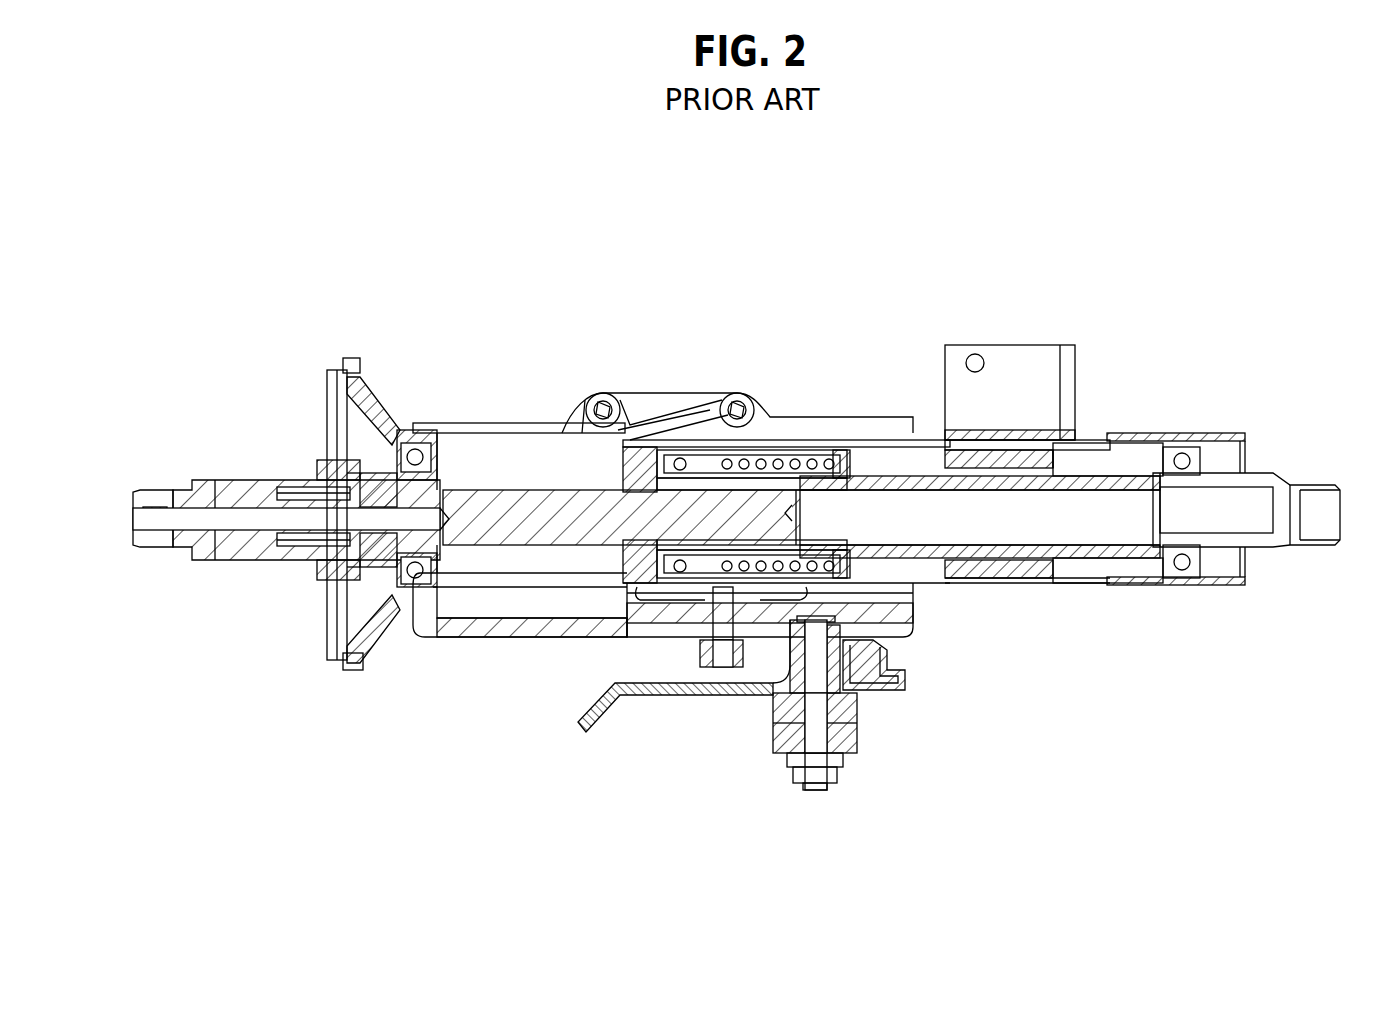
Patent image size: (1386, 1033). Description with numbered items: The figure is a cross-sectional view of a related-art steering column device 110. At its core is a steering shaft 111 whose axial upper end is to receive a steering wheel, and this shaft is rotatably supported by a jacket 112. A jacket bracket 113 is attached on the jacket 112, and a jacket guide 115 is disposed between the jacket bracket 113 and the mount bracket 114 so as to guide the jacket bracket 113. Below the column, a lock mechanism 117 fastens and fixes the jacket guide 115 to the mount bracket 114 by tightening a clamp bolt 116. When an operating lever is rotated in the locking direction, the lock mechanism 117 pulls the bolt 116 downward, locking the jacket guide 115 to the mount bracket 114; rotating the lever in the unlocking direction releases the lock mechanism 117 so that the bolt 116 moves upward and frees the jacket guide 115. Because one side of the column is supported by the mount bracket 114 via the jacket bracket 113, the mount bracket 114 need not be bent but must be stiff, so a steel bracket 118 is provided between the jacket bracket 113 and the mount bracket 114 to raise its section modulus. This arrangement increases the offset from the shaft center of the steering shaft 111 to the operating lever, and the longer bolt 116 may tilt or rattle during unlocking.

The steering column device 110 is at (834, 327).
The steering shaft 111 is at (1262, 473).
The jacket 112 is at (1063, 578).
The jacket bracket 113 is at (913, 590).
The mount bracket 114 is at (718, 690).
The jacket guide 115 is at (520, 637).
The clamp bolt 116 is at (815, 792).
The lock mechanism 117 is at (858, 740).
The steel bracket 118 is at (885, 663).